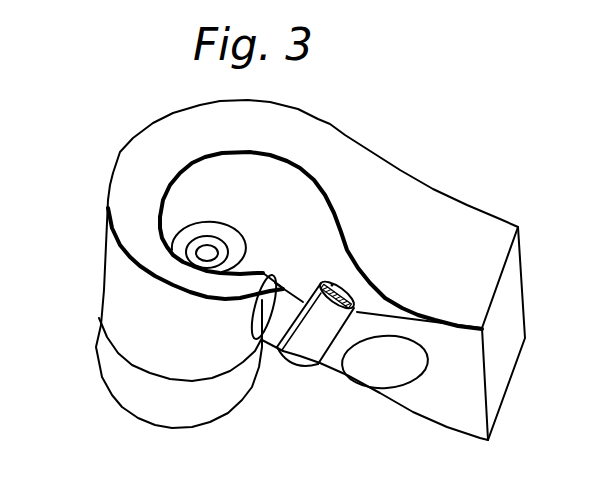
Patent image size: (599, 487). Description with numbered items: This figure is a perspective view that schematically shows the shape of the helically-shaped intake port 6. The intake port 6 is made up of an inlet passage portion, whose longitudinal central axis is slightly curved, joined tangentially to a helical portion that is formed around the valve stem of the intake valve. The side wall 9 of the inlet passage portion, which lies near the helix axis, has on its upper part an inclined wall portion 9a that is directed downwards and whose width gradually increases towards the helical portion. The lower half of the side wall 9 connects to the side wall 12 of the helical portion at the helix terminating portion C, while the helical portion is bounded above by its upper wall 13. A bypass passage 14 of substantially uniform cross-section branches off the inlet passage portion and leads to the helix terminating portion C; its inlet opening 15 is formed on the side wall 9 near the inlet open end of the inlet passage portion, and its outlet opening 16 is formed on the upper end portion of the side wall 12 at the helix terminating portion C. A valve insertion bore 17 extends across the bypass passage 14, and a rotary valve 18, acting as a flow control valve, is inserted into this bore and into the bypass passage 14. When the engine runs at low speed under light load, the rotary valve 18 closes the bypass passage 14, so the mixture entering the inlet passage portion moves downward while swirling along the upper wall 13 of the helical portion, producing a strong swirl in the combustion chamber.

The helically-shaped intake port 6 is at (468, 195).
The side wall 9 is at (443, 417).
The inclined wall portion 9a is at (370, 288).
The side wall of the helical portion 12 is at (125, 310).
The upper wall of the helical portion 13 is at (137, 250).
The bypass passage 14 is at (338, 363).
The inlet opening 15 is at (380, 376).
The outlet opening 16 is at (252, 313).
The valve insertion bore 17 is at (334, 284).
The rotary valve 18 is at (303, 356).
The helix terminating portion C is at (259, 270).